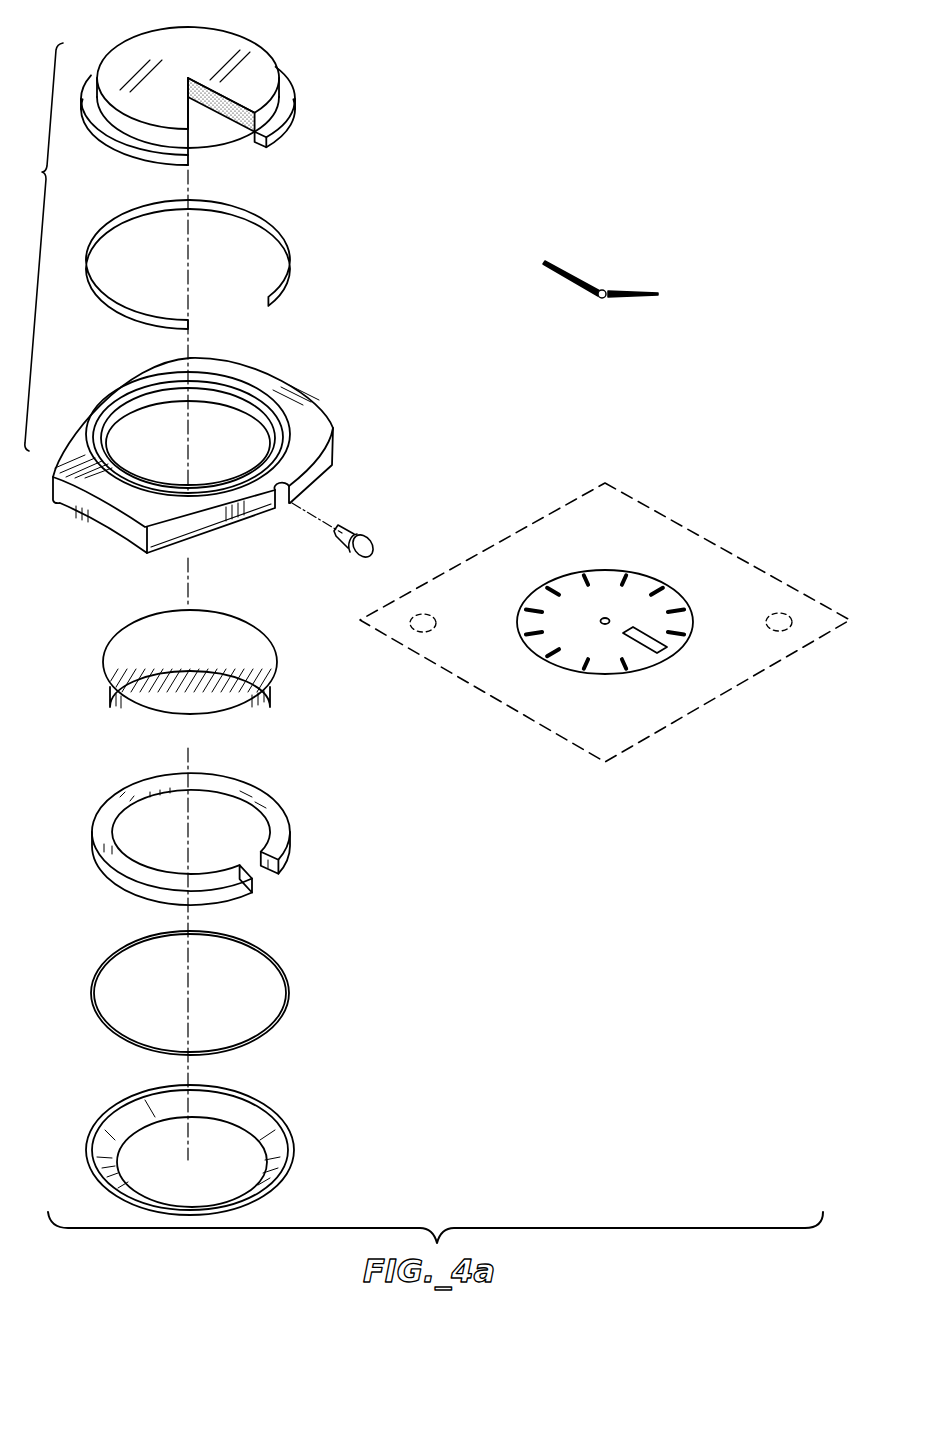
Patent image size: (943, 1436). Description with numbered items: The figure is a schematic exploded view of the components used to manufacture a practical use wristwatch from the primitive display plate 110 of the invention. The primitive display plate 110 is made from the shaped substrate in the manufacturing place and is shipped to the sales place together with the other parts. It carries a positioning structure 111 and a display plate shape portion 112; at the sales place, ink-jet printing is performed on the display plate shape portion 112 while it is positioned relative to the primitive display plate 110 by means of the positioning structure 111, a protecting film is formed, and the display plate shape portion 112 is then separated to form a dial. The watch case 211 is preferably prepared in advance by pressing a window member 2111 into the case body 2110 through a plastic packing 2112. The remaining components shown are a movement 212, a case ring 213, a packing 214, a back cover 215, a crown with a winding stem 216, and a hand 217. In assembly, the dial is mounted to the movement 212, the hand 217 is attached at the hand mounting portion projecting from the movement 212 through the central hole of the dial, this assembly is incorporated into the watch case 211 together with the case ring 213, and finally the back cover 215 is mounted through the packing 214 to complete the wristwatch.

The primitive display plate 110 is at (728, 693).
The positioning structure 111 is at (408, 628).
The display plate shape portion 112 is at (645, 572).
The watch case 211 is at (61, 247).
The case body 2110 is at (284, 378).
The window member 2111 is at (280, 72).
The plastic packing 2112 is at (272, 222).
The movement 212 is at (273, 705).
The case ring 213 is at (293, 838).
The packing 214 is at (293, 997).
The back cover 215 is at (293, 1150).
The crown with a winding stem 216 is at (372, 538).
The hand 217 is at (630, 290).